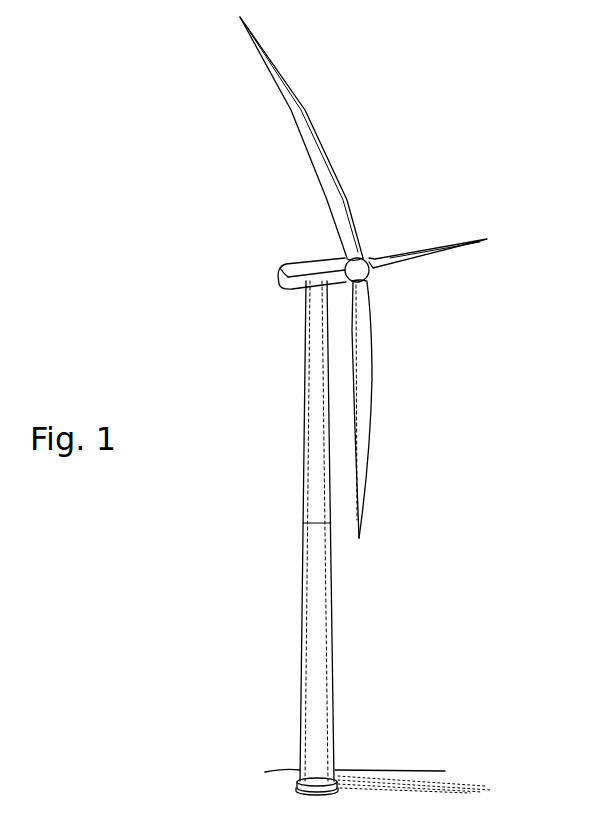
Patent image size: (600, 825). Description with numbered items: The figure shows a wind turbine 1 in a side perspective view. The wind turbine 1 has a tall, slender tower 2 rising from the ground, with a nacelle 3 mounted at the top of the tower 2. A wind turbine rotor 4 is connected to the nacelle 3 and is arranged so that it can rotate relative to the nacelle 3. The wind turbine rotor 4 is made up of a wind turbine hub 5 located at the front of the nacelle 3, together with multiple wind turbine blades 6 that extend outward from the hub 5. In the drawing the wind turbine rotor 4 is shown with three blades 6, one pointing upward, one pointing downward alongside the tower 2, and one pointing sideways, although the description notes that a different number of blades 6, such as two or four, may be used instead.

The wind turbine 1 is at (434, 150).
The tower 2 is at (310, 438).
The nacelle 3 is at (285, 266).
The wind turbine rotor 4 is at (398, 298).
The wind turbine hub 5 is at (366, 258).
The wind turbine blade 6 is at (290, 121).